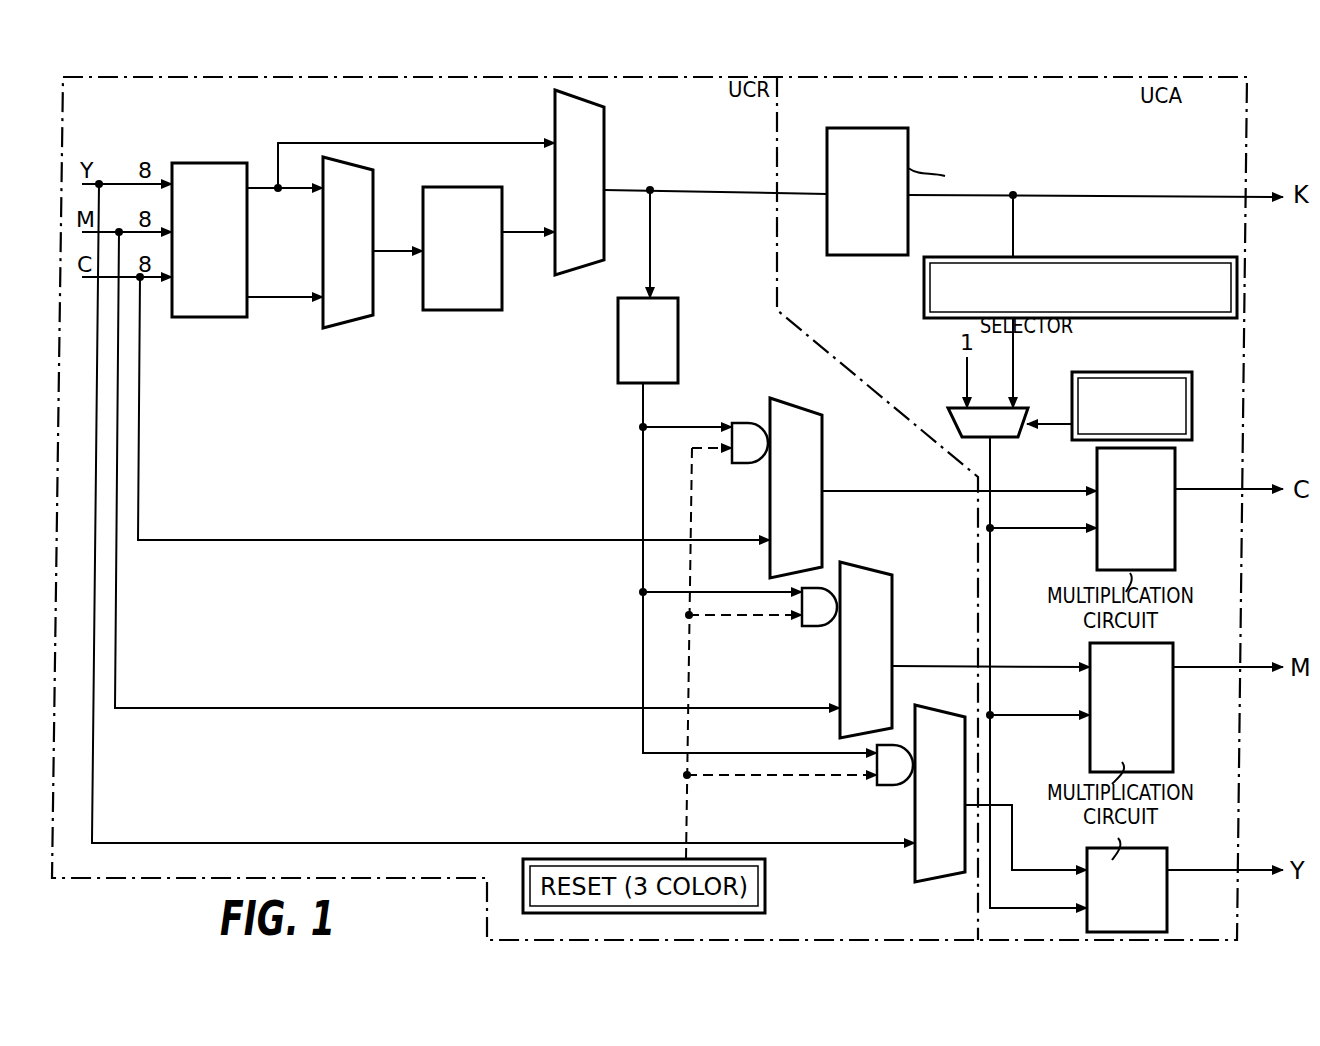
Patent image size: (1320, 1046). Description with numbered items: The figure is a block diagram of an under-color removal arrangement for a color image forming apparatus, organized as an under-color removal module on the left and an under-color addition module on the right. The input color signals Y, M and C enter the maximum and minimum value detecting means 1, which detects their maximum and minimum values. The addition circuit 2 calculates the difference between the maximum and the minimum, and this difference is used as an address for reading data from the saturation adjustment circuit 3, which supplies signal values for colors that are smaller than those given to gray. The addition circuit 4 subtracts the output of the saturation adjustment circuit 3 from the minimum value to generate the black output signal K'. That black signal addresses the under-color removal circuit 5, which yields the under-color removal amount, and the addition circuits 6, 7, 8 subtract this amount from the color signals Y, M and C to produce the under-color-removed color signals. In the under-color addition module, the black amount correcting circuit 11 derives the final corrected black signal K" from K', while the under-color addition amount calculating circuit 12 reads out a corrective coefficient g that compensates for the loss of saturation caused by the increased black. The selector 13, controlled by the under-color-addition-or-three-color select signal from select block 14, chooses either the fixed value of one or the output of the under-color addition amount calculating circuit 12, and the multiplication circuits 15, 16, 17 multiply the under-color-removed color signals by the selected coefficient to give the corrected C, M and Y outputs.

The maximum and minimum value detecting means 1 is at (238, 318).
The addition circuit 2 is at (372, 210).
The saturation adjustment circuit 3 is at (456, 302).
The addition circuit 4 is at (628, 182).
The under-color removal circuit 5 is at (618, 365).
The addition circuit 6 is at (783, 459).
The addition circuit 7 is at (896, 619).
The addition circuit 8 is at (883, 794).
The black amount correcting circuit 11 is at (879, 206).
The under-color addition amount calculating circuit 12 is at (1108, 257).
The selector 13 is at (1026, 408).
The UCA/3C select 14 is at (1162, 372).
The multiplication circuit 15 is at (1097, 472).
The multiplication circuit 16 is at (1090, 742).
The multiplication circuit 17 is at (1167, 908).